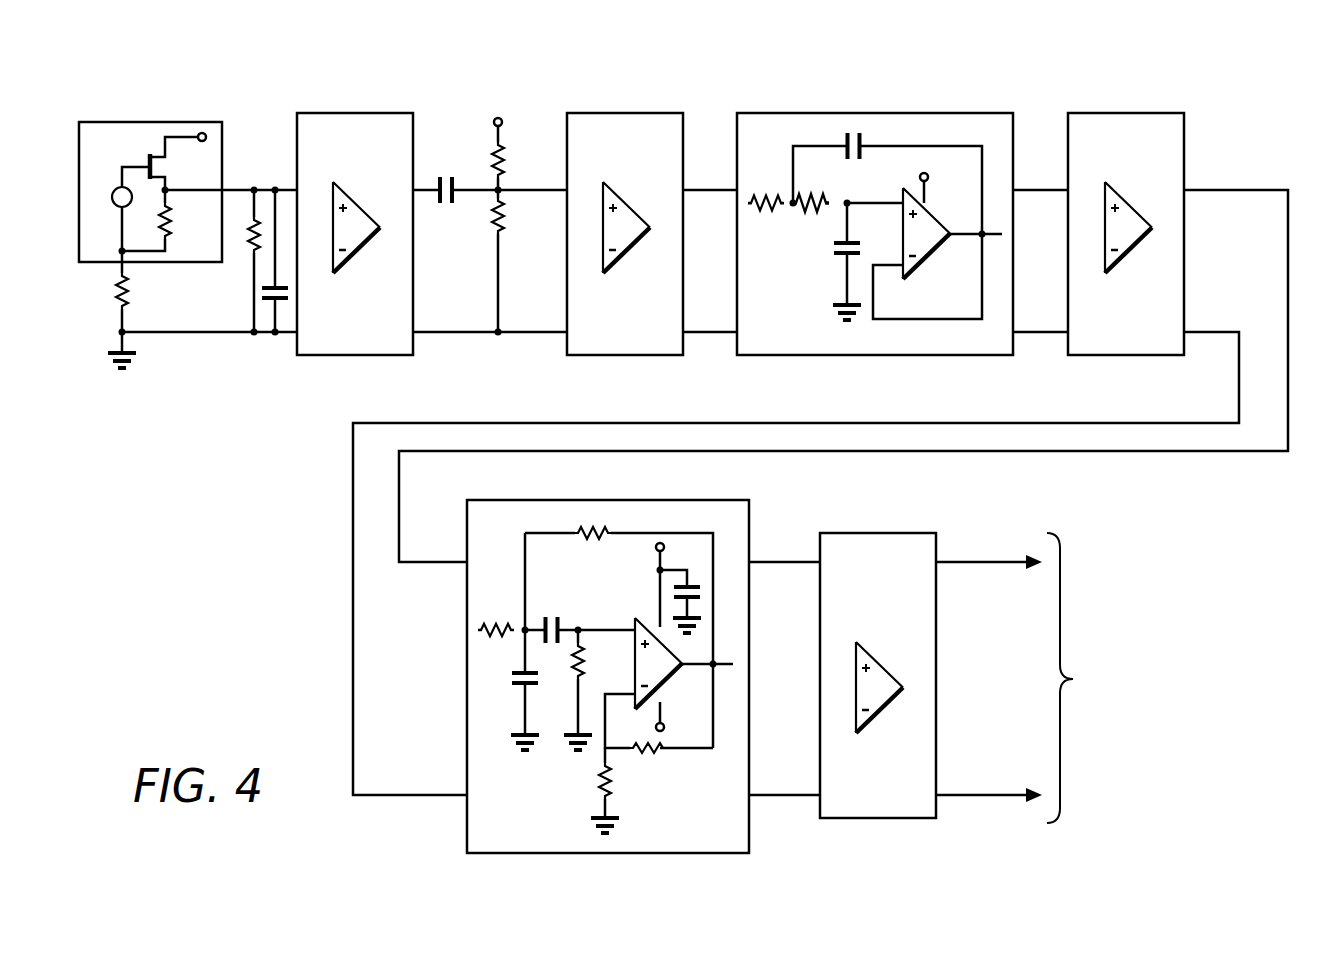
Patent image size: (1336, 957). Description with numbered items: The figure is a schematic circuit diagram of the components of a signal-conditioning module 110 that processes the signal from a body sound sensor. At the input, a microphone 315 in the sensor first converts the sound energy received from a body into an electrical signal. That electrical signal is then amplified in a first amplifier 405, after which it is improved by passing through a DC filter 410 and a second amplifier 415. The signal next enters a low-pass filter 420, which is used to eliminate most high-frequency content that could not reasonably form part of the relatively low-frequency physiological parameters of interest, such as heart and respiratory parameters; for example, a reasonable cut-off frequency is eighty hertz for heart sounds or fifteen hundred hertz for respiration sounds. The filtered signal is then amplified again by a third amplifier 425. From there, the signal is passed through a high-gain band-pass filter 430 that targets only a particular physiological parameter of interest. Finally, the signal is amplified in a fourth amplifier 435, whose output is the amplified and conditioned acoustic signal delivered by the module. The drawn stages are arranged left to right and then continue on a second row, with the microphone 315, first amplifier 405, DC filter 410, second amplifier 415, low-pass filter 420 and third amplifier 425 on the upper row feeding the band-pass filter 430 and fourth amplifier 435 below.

The signal-conditioning module 110 is at (1257, 88).
The microphone 315 is at (187, 262).
The first amplifier 405 is at (355, 355).
The DC filter 410 is at (472, 352).
The second amplifier 415 is at (625, 355).
The low-pass filter 420 is at (870, 355).
The third amplifier 425 is at (1127, 355).
The band-pass filter 430 is at (602, 853).
The fourth amplifier 435 is at (878, 818).